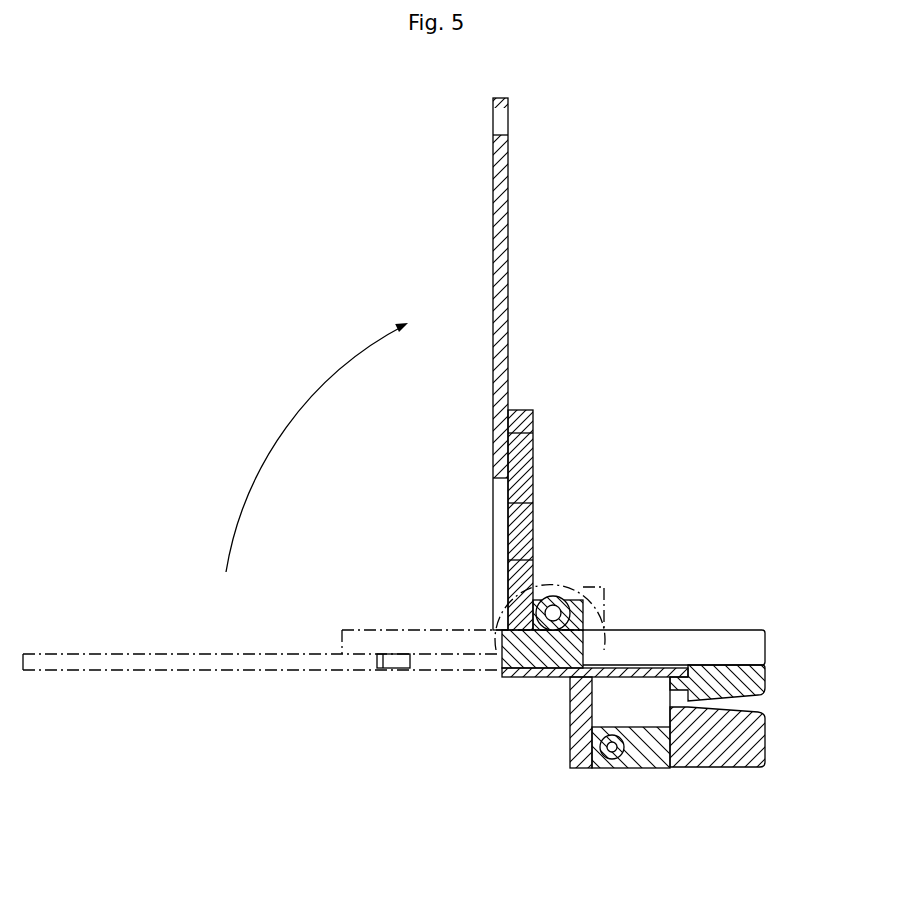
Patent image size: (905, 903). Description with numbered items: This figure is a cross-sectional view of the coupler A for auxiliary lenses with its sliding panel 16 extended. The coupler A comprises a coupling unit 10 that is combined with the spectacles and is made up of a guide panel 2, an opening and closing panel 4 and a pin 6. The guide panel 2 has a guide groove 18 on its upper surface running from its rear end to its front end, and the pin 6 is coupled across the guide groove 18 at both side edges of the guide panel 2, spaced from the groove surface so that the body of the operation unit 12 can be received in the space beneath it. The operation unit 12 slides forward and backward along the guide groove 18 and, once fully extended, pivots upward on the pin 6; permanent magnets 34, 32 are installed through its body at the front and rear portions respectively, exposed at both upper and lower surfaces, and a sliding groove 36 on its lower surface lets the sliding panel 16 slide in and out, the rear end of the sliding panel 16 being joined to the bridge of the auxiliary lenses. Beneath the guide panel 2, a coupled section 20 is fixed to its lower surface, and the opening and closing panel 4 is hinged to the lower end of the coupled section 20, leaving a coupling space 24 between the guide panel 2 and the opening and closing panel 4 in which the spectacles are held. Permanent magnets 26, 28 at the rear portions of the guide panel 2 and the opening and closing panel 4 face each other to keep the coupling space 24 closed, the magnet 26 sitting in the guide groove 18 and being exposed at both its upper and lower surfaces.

The guide panel 2 is at (708, 608).
The opening and closing panel 4 is at (587, 769).
The pin 6 is at (560, 603).
The coupling unit 10 is at (779, 711).
The operation unit 12 is at (563, 543).
The sliding panel 16 is at (497, 265).
The guide groove 18 is at (740, 645).
The coupled section 20 is at (577, 727).
The coupling space 24 is at (622, 758).
The permanent magnet 26 is at (767, 673).
The permanent magnet 28 is at (767, 750).
The permanent magnet 32 is at (520, 585).
The permanent magnet 34 is at (508, 466).
The sliding groove 36 is at (508, 538).
The coupler A is at (705, 448).